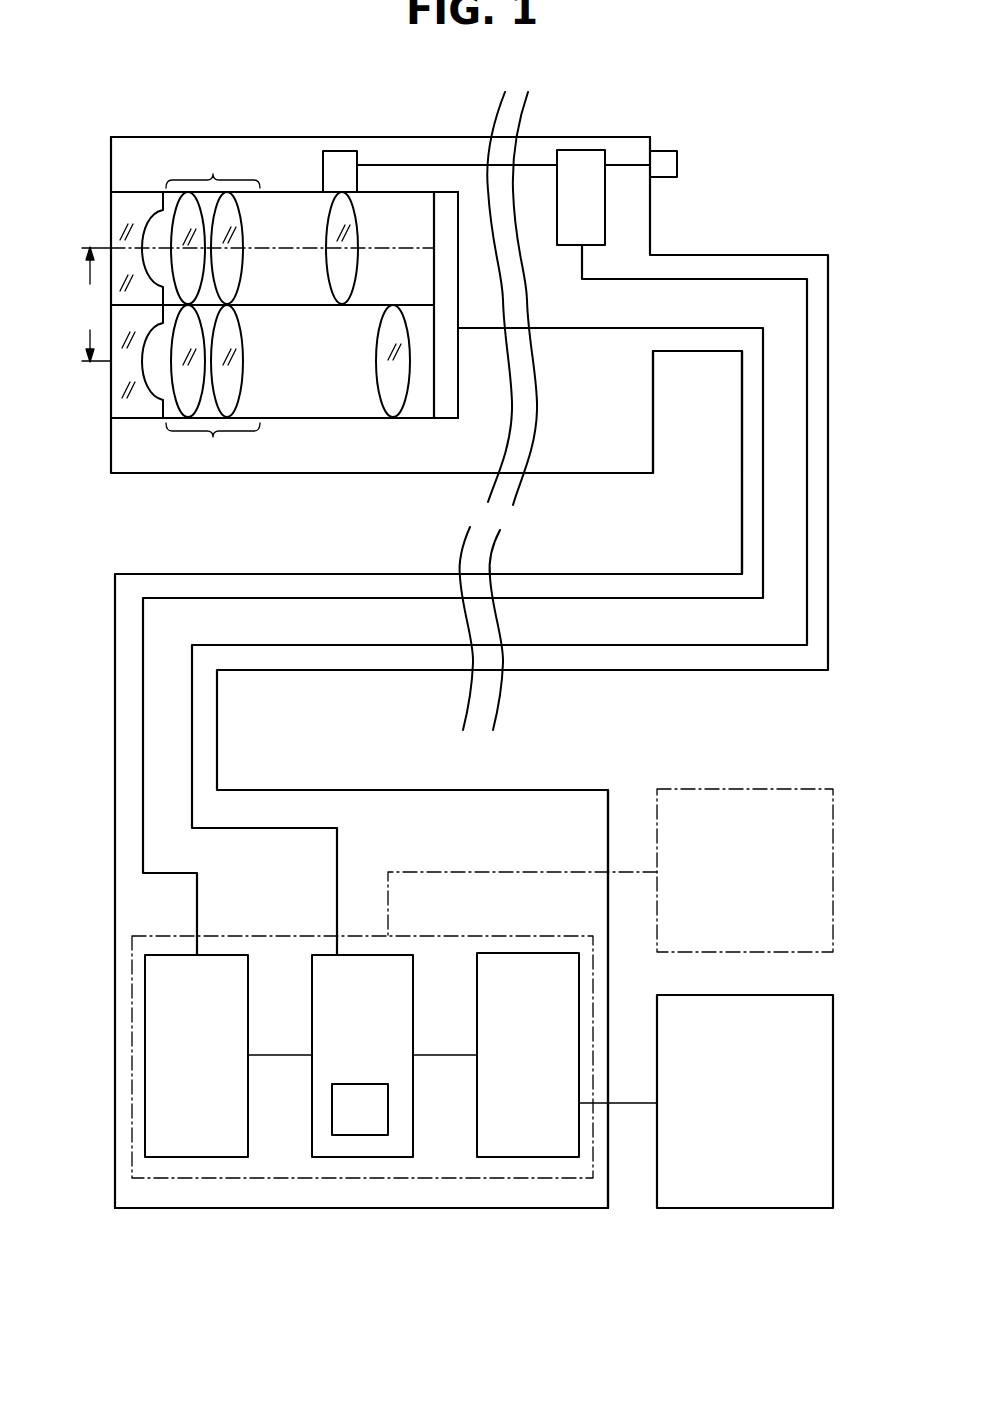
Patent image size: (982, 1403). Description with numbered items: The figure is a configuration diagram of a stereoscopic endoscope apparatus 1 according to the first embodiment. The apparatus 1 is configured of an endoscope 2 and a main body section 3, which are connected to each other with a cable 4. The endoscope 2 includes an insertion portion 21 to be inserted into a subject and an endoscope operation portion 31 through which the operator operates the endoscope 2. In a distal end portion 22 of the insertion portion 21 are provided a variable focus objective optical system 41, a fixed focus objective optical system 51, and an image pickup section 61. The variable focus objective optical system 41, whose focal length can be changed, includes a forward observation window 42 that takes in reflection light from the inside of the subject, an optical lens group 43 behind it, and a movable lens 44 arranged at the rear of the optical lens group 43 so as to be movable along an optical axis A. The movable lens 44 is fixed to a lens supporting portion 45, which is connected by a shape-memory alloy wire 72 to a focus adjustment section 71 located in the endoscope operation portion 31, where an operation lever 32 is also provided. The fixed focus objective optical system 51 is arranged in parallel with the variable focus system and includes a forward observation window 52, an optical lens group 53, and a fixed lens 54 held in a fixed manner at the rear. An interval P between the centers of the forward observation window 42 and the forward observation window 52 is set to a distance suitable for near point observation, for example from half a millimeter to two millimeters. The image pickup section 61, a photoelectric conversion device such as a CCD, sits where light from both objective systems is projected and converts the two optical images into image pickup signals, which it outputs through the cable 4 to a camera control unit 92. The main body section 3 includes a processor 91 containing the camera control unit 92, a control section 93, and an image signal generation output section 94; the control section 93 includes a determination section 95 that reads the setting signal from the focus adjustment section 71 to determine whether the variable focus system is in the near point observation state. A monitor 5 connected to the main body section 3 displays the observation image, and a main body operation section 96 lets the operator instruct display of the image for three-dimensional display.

The stereoscopic endoscope apparatus 1 is at (745, 189).
The endoscope 2 is at (561, 129).
The main body section 3 is at (113, 955).
The cable 4 is at (525, 573).
The monitor 5 is at (780, 1208).
The insertion portion 21 is at (260, 137).
The distal end portion 22 is at (170, 137).
The endoscope operation portion 31 is at (653, 440).
The operation lever 32 is at (677, 158).
The variable focus objective optical system 41 is at (268, 192).
The forward observation window 42 is at (111, 222).
The optical lens group 43 is at (213, 226).
The movable lens 44 is at (358, 233).
The lens supporting portion 45 is at (342, 137).
The fixed focus objective optical system 51 is at (290, 418).
The forward observation window 52 is at (111, 390).
The optical lens group 53 is at (213, 388).
The fixed lens 54 is at (375, 362).
The image pickup section 61 is at (458, 352).
The focus adjustment section 71 is at (568, 246).
The shape-memory alloy wire 72 is at (388, 165).
The processor 91 is at (300, 937).
The camera control unit 92 is at (160, 1157).
The control section 93 is at (322, 1157).
The image signal generation output section 94 is at (556, 1157).
The determination section 95 is at (390, 1123).
The main body operation section 96 is at (763, 789).
The optical axis A is at (273, 248).
The interval P is at (96, 304).